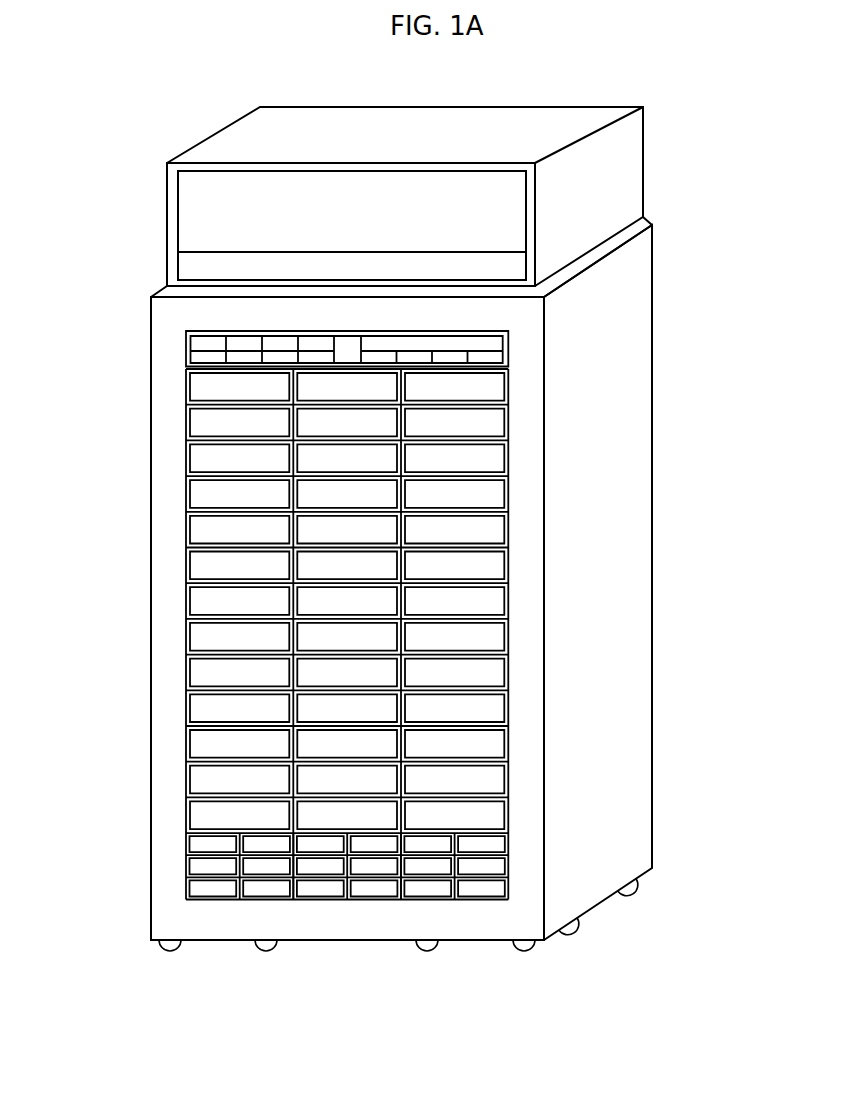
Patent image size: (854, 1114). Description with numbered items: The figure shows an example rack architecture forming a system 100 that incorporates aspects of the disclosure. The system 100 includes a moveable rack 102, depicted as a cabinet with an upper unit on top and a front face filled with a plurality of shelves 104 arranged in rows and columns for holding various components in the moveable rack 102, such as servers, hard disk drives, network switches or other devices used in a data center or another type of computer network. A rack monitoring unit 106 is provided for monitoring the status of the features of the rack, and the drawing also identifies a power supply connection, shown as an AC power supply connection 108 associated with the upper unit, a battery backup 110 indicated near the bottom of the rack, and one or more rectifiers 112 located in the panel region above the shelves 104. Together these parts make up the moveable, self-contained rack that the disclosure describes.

The system 100 is at (742, 90).
The moveable rack 102 is at (615, 582).
The shelves 104 is at (508, 463).
The rack monitoring unit 106 is at (508, 350).
The AC power supply connection 108 is at (177, 264).
The battery backup 110 is at (518, 868).
The rectifiers 112 is at (186, 363).